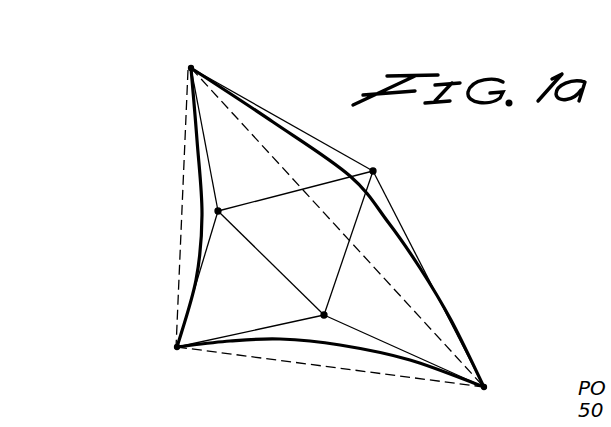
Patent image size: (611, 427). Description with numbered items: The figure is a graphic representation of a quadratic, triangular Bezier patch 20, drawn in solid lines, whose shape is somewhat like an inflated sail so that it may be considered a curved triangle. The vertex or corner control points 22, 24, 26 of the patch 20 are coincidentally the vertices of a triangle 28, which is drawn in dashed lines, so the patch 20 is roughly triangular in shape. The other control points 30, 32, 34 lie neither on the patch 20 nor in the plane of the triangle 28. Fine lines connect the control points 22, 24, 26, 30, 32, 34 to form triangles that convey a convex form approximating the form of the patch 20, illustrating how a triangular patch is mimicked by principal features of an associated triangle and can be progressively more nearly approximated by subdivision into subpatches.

The quadratic triangular Bezier patch 20 is at (309, 347).
The vertex control point 22 is at (191, 68).
The vertex control point 24 is at (173, 350).
The vertex control point 26 is at (486, 389).
The triangle 28 is at (363, 255).
The control point 30 is at (218, 211).
The control point 32 is at (375, 170).
The control point 34 is at (324, 315).